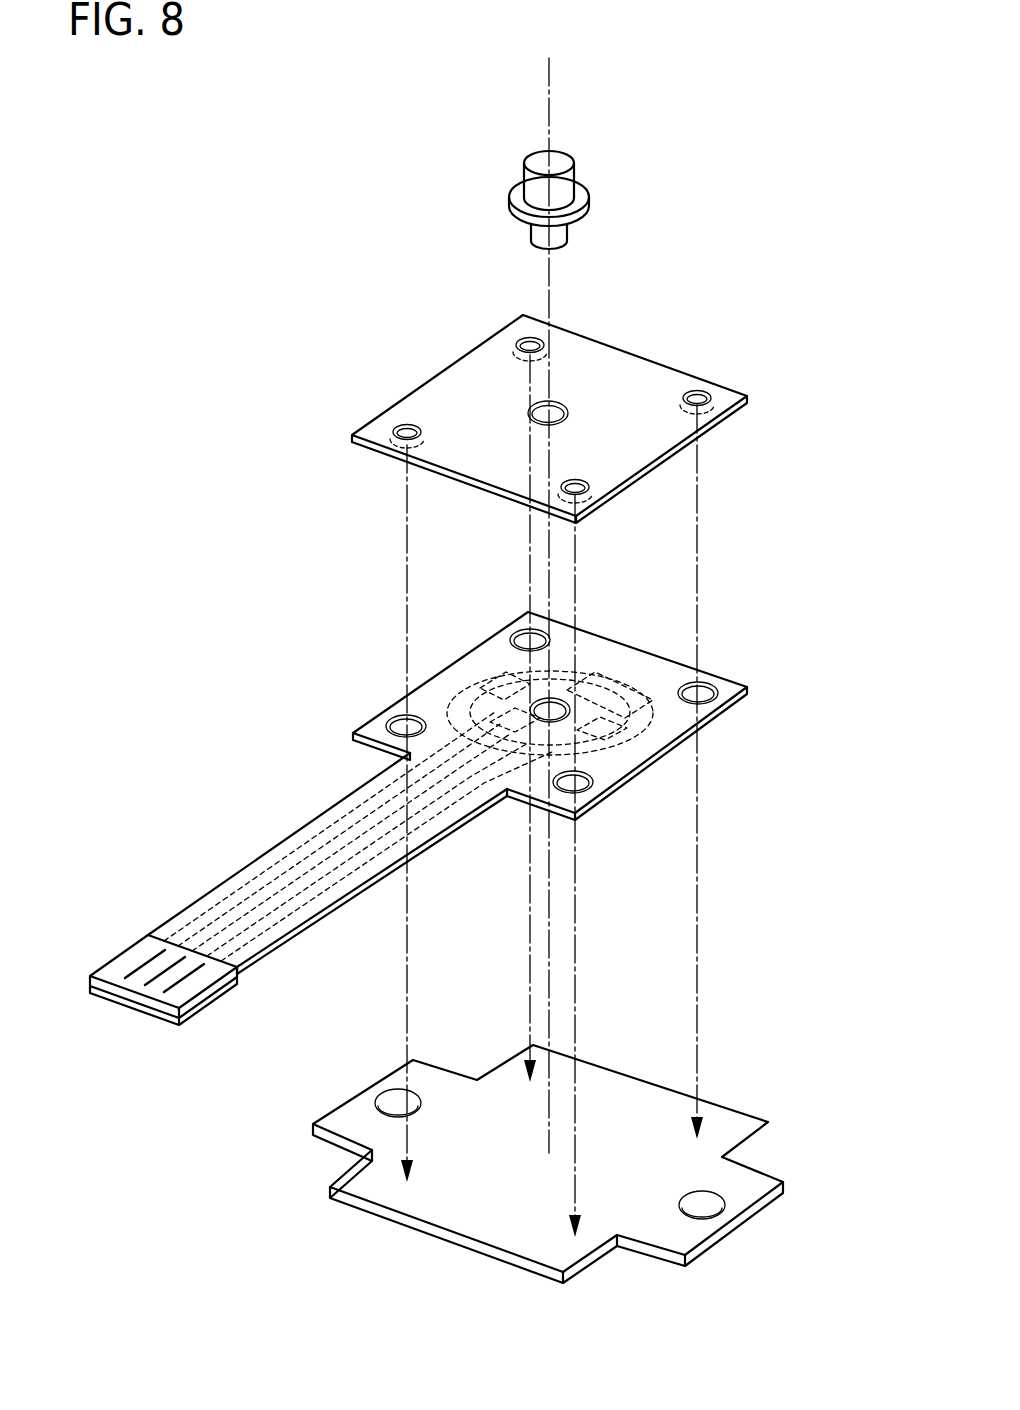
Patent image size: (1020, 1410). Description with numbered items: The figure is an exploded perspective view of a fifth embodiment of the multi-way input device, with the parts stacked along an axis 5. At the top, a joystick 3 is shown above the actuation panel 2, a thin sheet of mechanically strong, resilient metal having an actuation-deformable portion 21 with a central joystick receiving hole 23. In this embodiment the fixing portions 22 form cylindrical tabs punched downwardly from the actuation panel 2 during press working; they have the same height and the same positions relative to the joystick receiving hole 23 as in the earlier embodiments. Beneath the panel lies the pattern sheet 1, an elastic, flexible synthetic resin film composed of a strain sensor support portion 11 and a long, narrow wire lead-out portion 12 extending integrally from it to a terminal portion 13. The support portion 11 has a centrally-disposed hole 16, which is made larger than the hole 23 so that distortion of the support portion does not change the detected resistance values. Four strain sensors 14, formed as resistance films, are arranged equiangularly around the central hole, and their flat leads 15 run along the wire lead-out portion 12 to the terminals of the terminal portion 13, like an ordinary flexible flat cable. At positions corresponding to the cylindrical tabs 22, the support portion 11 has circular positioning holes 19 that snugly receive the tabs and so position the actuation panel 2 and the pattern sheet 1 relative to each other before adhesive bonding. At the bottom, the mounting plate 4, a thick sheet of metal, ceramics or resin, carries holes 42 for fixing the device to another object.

The pattern sheet 1 is at (250, 870).
The actuation panel 2 is at (559, 403).
The push button 3 is at (597, 198).
The mounting plate 4 is at (323, 1200).
The axis 5 is at (549, 100).
The strain sensor support portion 11 is at (435, 687).
The wire lead-out portion 12 is at (346, 806).
The terminal portion 13 is at (183, 1000).
The strain sensors 14 is at (615, 730).
The leads 15 is at (255, 905).
The hole 16 is at (540, 700).
The positioning holes 19 is at (520, 636).
The actuation-deformable portion 21 is at (625, 362).
The fixing portions 22 is at (508, 356).
The joystick receiving hole 23 is at (530, 415).
The holes 42 is at (393, 1096).